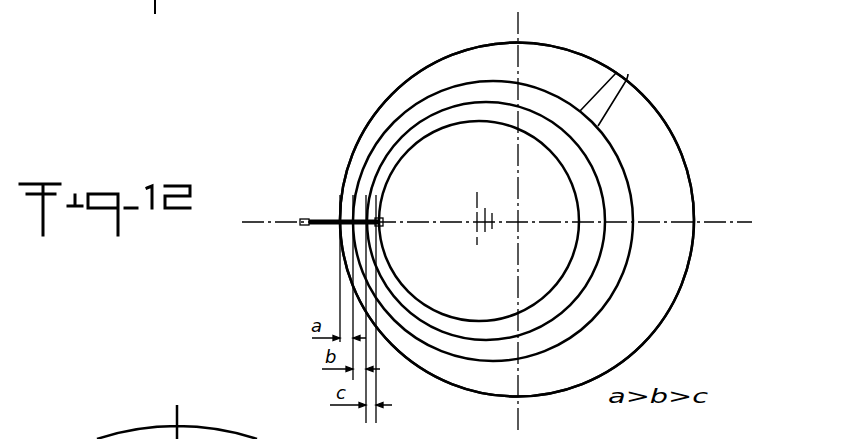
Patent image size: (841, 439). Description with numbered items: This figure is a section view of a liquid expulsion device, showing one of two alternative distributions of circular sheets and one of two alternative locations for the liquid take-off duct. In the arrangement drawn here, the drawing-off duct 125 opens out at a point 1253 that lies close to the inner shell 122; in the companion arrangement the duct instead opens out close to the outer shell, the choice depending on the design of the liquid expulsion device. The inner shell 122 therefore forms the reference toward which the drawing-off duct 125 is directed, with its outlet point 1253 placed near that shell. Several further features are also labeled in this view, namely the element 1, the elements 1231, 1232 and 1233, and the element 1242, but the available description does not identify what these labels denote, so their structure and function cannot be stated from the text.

The roller 1 is at (664, 118).
The inner shell 122 is at (575, 196).
The first layer 1231 is at (345, 210).
The second layer 1232 is at (356, 192).
The third layer 1233 is at (372, 193).
The slot 1242 is at (615, 84).
The drawing-off duct 125 is at (321, 228).
The point 1253 is at (384, 220).